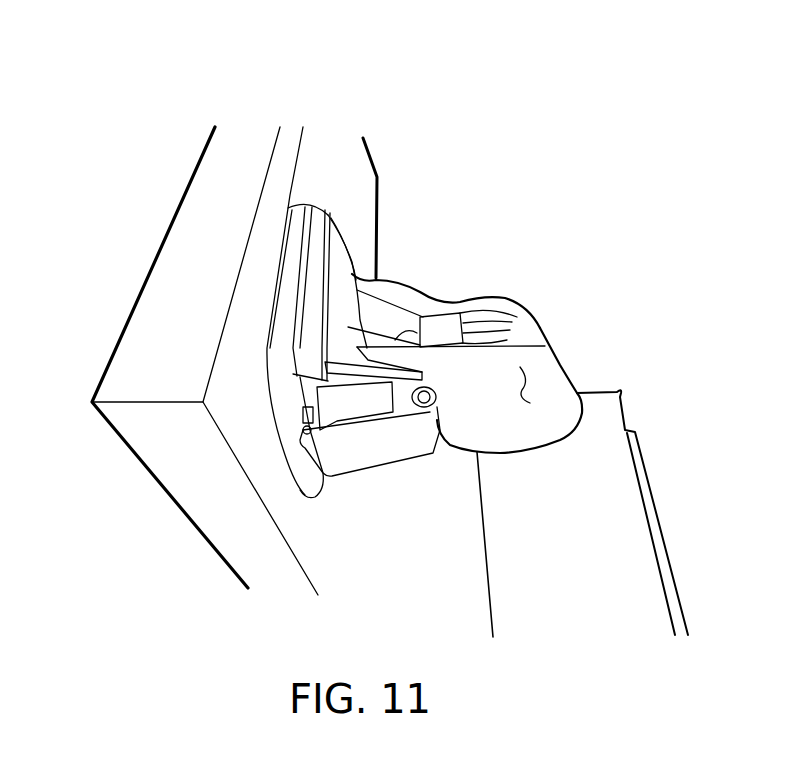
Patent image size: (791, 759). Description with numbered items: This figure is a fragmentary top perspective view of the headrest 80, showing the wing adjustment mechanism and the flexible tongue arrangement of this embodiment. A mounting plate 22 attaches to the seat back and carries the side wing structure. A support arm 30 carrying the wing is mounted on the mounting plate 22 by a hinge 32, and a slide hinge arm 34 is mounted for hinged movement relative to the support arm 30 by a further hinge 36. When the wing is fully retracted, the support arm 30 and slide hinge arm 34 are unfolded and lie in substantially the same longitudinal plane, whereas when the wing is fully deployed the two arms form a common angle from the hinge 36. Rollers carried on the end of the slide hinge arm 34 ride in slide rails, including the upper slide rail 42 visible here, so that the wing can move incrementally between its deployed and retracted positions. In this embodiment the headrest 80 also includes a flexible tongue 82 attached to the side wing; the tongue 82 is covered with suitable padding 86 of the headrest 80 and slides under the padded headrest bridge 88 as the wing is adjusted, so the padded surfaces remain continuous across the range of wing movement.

The headrest 80 is at (142, 145).
The mounting plate 22 is at (280, 350).
The upper slide rail 42 is at (310, 312).
The padded headrest bridge 88 is at (363, 195).
The flexible tongue 82 is at (485, 300).
The padding 86 is at (527, 387).
The support arm 30 is at (342, 465).
The slide hinge arm 34 is at (357, 388).
The hinge 32 is at (300, 437).
The hinge 36 is at (423, 410).